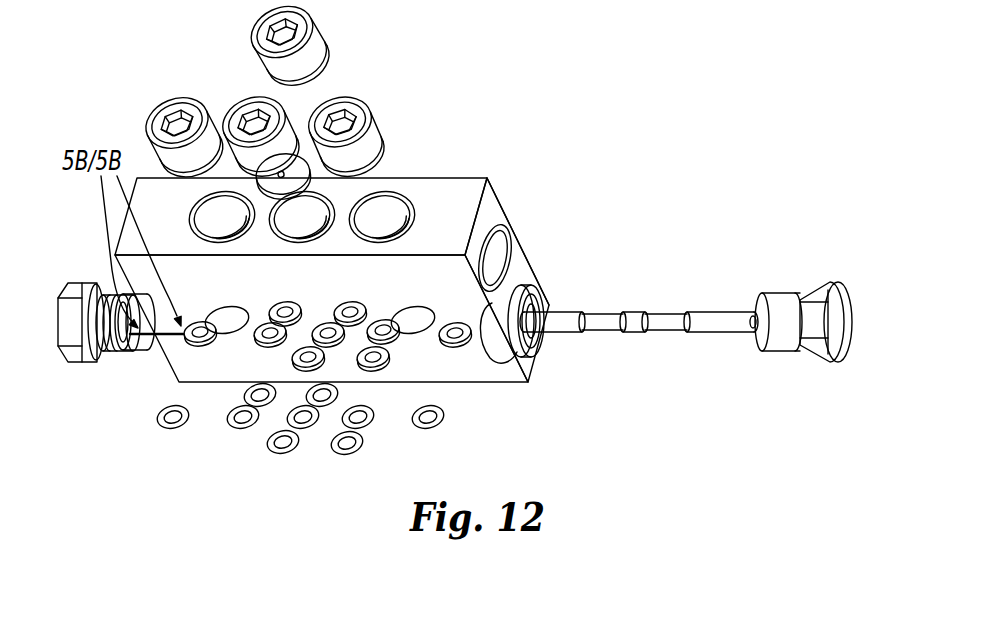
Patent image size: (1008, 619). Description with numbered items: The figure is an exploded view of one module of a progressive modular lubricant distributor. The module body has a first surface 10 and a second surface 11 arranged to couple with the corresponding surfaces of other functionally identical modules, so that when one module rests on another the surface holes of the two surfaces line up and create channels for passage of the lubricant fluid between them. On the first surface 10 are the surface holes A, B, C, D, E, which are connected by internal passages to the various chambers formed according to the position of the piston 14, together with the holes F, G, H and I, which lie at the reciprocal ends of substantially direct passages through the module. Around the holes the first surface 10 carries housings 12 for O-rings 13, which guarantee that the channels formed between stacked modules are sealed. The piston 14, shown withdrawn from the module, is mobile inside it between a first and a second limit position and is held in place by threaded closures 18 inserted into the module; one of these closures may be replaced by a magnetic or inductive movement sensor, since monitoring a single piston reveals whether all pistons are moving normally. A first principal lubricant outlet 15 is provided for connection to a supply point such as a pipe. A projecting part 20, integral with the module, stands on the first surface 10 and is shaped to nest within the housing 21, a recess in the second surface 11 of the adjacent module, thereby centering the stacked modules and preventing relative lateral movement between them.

The first surface 10 is at (420, 270).
The second surface 11 is at (497, 198).
The housings for O-rings 12 is at (447, 326).
The O-rings 13 is at (332, 428).
The piston 14 is at (717, 320).
The first principal lubricant outlet 15 is at (493, 252).
The threaded closures 18 is at (80, 288).
The projecting part 20 is at (493, 342).
The housing (recess) 21 is at (517, 245).
The surface hole A is at (197, 324).
The surface hole B is at (262, 335).
The surface hole C is at (325, 325).
The surface hole D is at (385, 322).
The surface hole E is at (454, 341).
The surface hole F is at (374, 368).
The surface hole G is at (300, 358).
The surface hole H is at (282, 303).
The surface hole I is at (350, 303).